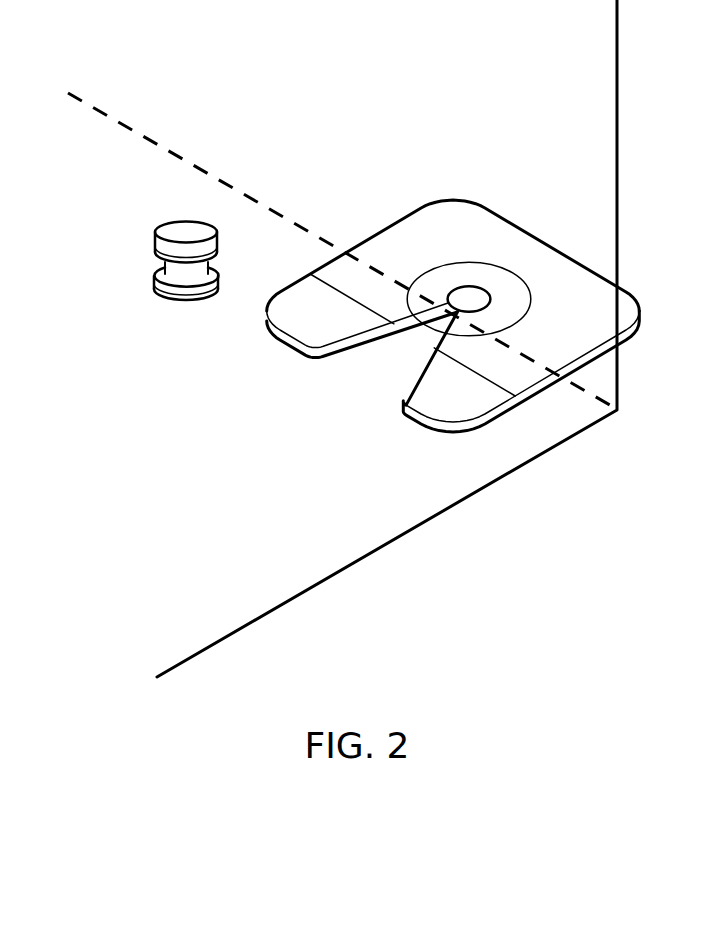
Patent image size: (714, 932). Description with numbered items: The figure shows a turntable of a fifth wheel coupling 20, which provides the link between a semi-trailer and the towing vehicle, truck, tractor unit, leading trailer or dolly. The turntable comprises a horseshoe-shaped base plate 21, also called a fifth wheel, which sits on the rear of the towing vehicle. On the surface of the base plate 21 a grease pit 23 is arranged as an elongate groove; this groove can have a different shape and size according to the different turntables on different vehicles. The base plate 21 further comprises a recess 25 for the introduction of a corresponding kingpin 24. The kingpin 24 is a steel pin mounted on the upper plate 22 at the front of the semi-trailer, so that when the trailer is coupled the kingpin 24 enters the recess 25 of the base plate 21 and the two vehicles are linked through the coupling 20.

The fifth wheel coupling 20 is at (252, 142).
The base plate 21 is at (387, 238).
The upper plate 22 is at (407, 533).
The grease pit 23 is at (447, 263).
The kingpin 24 is at (178, 304).
The recess 25 is at (470, 297).